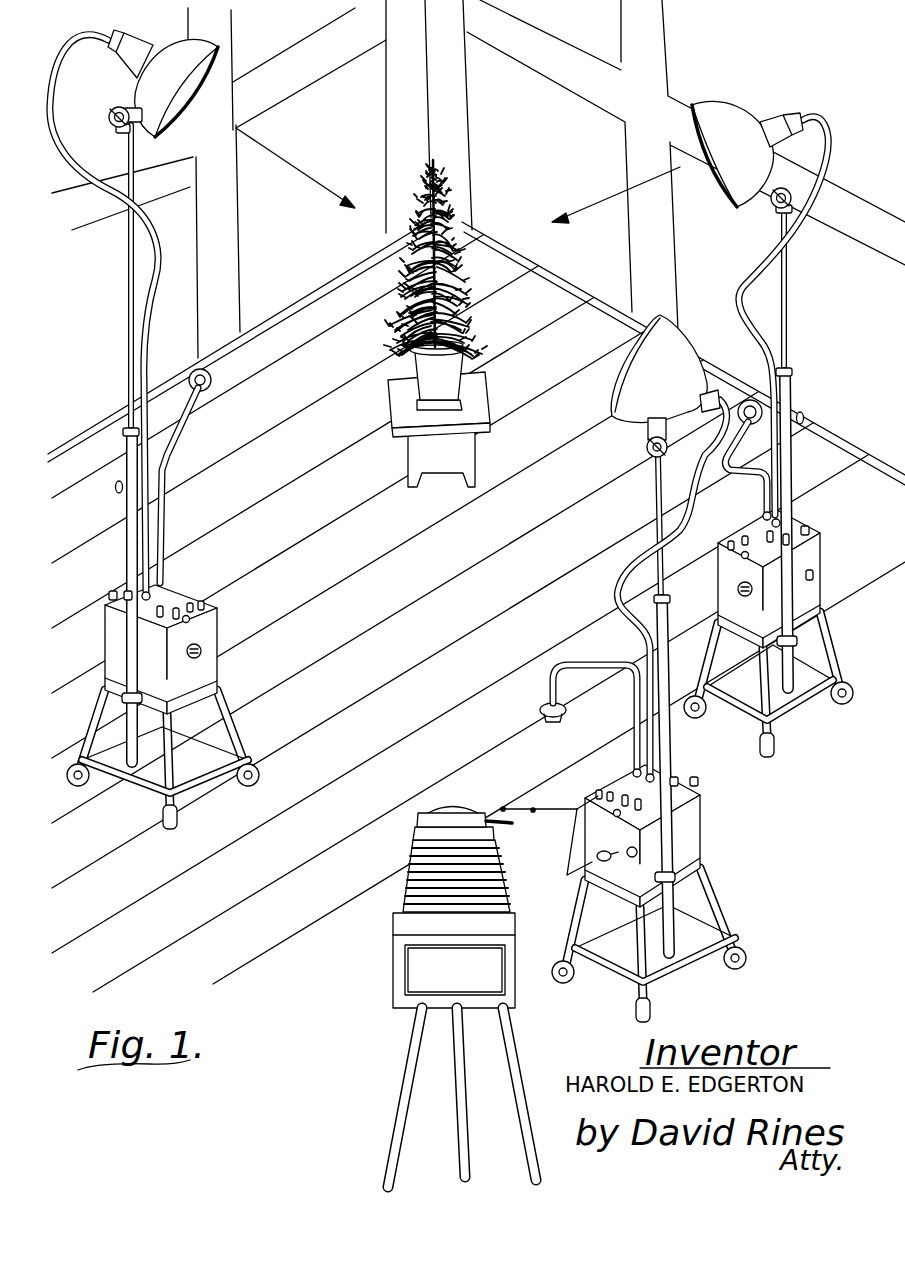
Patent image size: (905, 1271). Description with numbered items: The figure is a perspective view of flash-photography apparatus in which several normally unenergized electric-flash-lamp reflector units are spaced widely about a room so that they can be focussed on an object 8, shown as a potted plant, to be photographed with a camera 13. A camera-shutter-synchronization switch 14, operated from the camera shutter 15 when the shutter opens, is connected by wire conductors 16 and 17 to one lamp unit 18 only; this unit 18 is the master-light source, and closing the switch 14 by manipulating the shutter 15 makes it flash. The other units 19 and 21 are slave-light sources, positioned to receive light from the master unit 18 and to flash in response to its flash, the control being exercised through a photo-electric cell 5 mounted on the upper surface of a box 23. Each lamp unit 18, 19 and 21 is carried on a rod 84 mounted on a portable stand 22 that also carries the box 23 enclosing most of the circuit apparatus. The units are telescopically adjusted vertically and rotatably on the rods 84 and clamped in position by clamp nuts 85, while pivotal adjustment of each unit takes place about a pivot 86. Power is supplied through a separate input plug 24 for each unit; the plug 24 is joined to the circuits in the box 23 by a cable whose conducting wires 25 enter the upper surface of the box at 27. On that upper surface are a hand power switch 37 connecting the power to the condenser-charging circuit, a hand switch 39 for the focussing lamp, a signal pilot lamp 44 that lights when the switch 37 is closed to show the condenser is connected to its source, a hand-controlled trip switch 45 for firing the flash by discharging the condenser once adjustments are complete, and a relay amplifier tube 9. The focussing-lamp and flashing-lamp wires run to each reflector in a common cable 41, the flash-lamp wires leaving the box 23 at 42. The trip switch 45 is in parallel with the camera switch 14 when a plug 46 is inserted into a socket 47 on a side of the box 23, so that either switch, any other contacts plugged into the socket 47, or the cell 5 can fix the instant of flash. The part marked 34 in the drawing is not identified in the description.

The photo-electric cell 5 is at (165, 605).
The object 8 is at (463, 243).
The relay amplifier tube 9 is at (190, 604).
The camera 13 is at (397, 968).
The camera-shutter-synchronization switch 14 is at (528, 805).
The camera shutter 15 is at (511, 825).
The wire conductor 16 is at (565, 850).
The wire conductor 17 is at (548, 787).
The master-light-source lamp unit 18 is at (612, 404).
The slave-light-source lamp unit 19 is at (178, 55).
The slave-light-source lamp unit 21 is at (725, 110).
The portable stand 22 is at (100, 712).
The box 23 is at (105, 636).
The input plug 24 is at (750, 398).
The conducting wires 25 is at (165, 468).
The cable entry point 27 is at (771, 515).
The wall outlet plug 34 is at (212, 375).
The hand power switch 37 is at (206, 600).
The hand switch 39 is at (128, 590).
The cable 41 is at (146, 218).
The flash-lamp cable outlet 42 is at (780, 524).
The signal pilot lamp 44 is at (108, 592).
The hand-controlled trip switch 45 is at (190, 617).
The plug 46 is at (597, 863).
The socket 47 is at (202, 648).
The rod 84 is at (128, 535).
The clamp nut 85 is at (114, 490).
The pivot 86 is at (115, 107).